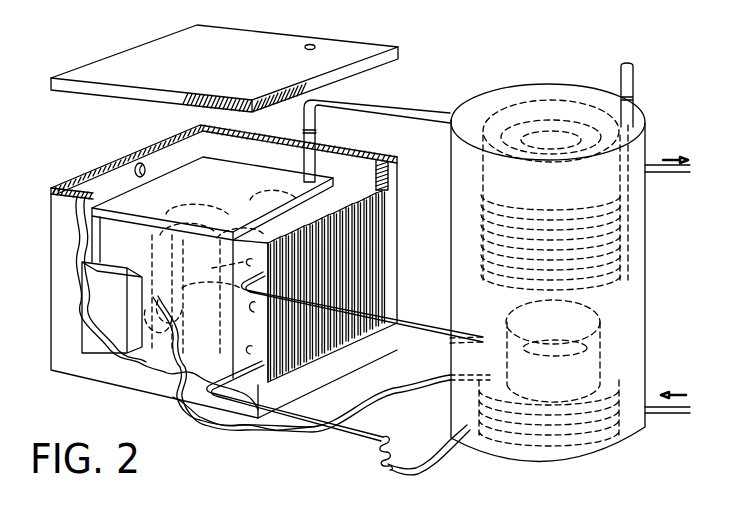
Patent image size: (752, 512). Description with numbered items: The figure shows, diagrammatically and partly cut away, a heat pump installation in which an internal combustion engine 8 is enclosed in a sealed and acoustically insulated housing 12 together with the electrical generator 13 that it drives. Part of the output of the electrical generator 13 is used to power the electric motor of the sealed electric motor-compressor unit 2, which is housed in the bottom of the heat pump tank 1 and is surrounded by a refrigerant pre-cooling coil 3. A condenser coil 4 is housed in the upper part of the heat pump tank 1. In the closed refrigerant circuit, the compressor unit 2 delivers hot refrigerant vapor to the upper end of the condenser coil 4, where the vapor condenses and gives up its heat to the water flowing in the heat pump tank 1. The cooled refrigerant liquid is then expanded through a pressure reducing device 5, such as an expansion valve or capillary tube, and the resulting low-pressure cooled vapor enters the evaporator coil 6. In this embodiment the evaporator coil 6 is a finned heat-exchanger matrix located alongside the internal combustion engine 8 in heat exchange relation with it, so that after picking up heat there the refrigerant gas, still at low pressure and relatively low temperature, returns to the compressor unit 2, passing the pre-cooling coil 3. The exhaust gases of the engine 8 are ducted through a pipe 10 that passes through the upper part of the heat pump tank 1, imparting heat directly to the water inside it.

The heat pump tank 1 is at (453, 248).
The sealed electric motor-compressor unit 2 is at (575, 313).
The refrigerant pre-cooling coil 3 is at (617, 370).
The condenser coil 4 is at (612, 212).
The pressure reducing device 5 is at (394, 446).
The evaporator coil 6 is at (325, 337).
The internal combustion engine 8 is at (201, 224).
The pipe 10 is at (400, 113).
The sealed and acoustically insulated housing 12 is at (130, 158).
The electrical generator 13 is at (148, 290).